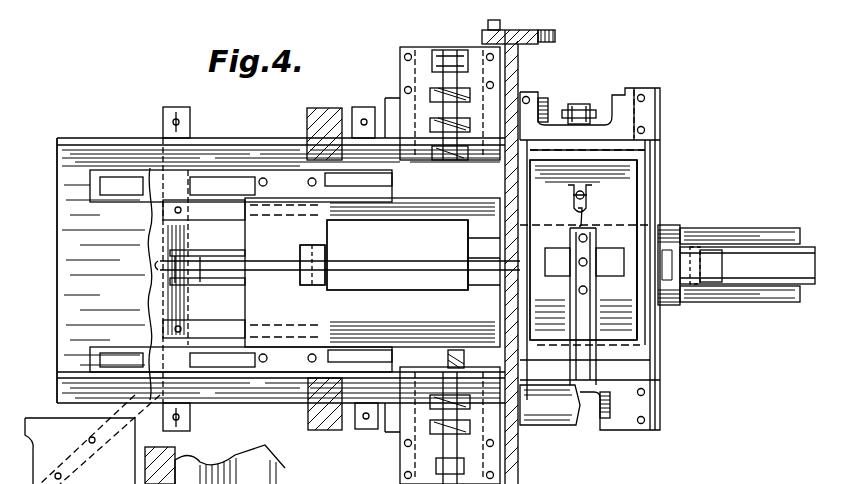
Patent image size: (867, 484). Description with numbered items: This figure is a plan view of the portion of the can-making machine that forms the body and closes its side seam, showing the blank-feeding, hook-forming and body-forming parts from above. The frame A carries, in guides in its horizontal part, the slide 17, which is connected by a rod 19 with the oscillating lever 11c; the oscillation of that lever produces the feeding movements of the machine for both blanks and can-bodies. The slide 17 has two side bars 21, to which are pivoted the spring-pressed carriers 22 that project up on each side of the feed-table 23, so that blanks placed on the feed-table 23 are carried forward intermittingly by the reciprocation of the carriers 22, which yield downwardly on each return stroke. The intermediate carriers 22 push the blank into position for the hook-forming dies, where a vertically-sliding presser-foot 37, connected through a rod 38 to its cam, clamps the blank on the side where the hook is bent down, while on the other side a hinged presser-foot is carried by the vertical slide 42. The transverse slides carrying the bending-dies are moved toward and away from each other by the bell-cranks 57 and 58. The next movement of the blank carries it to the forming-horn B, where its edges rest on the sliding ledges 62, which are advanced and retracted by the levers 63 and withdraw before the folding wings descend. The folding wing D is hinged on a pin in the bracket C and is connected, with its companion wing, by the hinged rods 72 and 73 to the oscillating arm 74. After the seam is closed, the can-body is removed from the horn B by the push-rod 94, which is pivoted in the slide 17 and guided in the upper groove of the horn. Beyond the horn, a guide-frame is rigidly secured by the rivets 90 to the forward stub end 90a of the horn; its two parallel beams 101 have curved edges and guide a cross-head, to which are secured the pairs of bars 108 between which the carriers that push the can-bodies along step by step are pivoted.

The feed-table 23 is at (91, 270).
The spring-pressed carriers 22 is at (236, 152).
The side bars 21 is at (270, 160).
The oscillating lever 11c is at (222, 243).
The rod 19 is at (222, 272).
The slide 17 is at (328, 238).
The push-rod 94 is at (436, 256).
The bell-crank 57 is at (438, 83).
The rod 38 is at (442, 126).
The presser-foot 37 is at (462, 162).
The frame A is at (519, 75).
The sliding ledges 62 is at (556, 99).
The levers 63 is at (586, 104).
The folding wing D is at (680, 343).
The hinged rod 73 is at (592, 238).
The hinged rod 72 is at (576, 290).
The oscillating arm 74 is at (597, 306).
The bracket C is at (645, 202).
The forming-horn B is at (670, 230).
The rivets 90 is at (700, 250).
The forward stub end 90a is at (706, 278).
The bars 108 is at (762, 237).
The parallel beams 101 is at (790, 272).
The vertical slide 42 is at (464, 372).
The bell-crank 58 is at (442, 455).